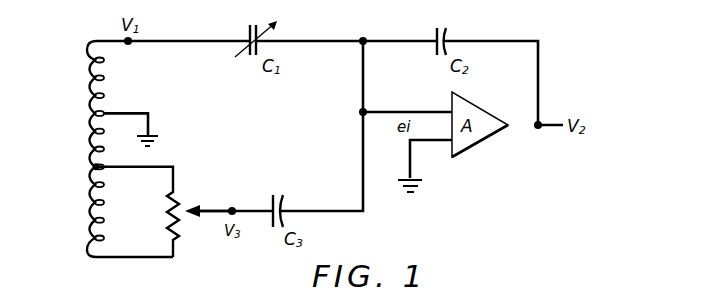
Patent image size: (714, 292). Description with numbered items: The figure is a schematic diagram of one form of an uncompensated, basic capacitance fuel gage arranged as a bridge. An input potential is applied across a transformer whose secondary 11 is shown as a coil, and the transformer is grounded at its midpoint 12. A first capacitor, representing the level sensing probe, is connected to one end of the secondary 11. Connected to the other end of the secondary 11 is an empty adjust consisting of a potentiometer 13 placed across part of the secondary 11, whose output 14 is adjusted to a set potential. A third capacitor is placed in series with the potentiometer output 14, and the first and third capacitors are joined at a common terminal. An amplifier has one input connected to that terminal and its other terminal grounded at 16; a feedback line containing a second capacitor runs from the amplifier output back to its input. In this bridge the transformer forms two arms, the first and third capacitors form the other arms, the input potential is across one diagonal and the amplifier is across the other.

The transformer secondary 11 is at (88, 202).
The midpoint 12 is at (135, 112).
The potentiometer 13 is at (177, 242).
The potentiometer output 14 is at (233, 207).
The ground 16 is at (412, 174).